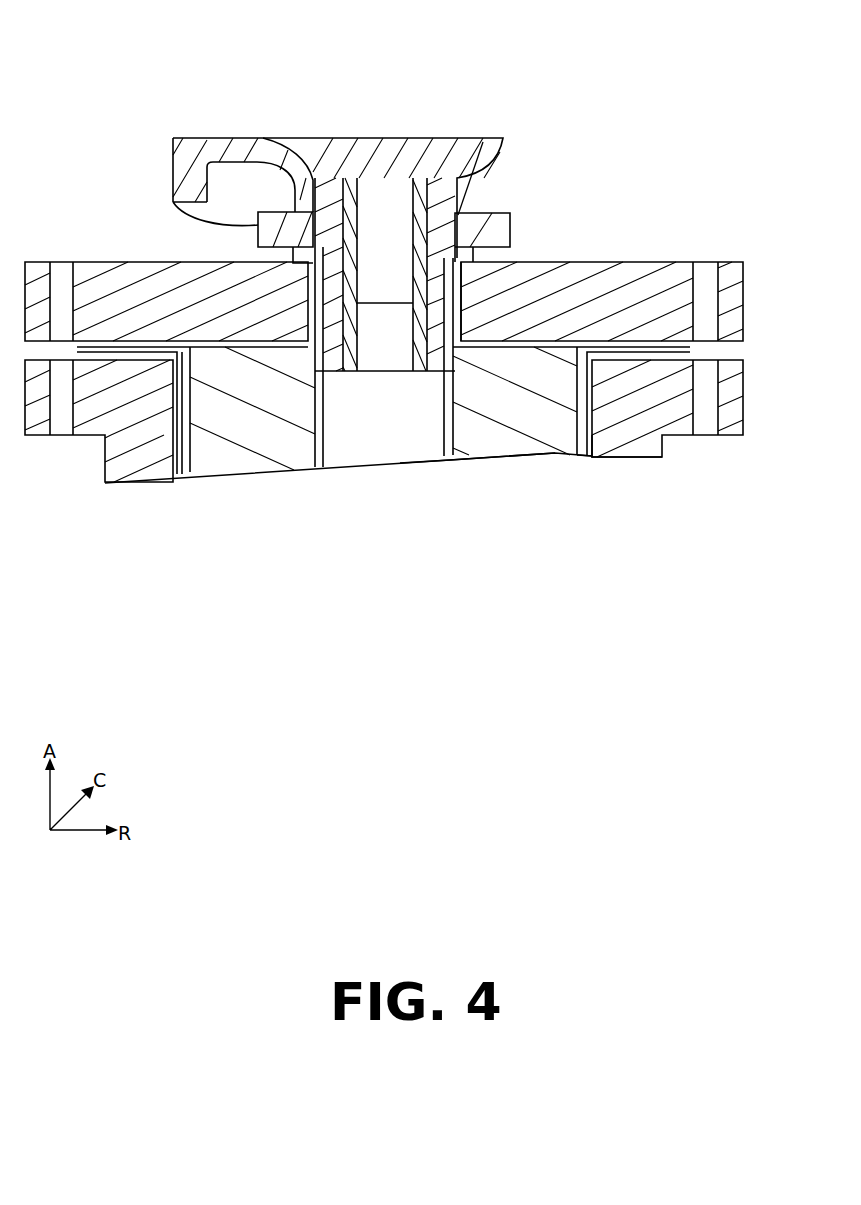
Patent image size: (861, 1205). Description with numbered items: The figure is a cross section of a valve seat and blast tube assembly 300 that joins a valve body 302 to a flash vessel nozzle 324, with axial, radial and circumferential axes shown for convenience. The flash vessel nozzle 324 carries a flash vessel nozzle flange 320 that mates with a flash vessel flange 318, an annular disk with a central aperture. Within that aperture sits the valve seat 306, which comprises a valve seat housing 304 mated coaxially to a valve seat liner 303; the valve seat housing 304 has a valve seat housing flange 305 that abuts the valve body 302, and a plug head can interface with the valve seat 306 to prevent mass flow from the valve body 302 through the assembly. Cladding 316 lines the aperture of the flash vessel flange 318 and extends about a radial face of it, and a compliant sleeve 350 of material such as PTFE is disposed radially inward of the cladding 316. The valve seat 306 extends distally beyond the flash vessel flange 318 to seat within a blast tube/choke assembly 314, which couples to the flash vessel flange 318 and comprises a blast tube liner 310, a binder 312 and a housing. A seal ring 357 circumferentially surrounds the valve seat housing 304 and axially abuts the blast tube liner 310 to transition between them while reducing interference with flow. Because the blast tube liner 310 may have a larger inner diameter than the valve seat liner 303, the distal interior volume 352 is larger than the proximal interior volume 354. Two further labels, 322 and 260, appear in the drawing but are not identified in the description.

The valve seat and blast tube assembly 300 is at (78, 88).
The valve body 302 is at (485, 153).
The valve seat liner 303 is at (423, 223).
The valve seat housing 304 is at (425, 203).
The valve seat housing flange 305 is at (172, 184).
The valve seat 306 is at (253, 236).
The blast tube liner 310 is at (312, 455).
The binder 312 is at (485, 448).
The blast tube/choke assembly 314 is at (587, 455).
The cladding 316 is at (458, 300).
The flash vessel flange 318 is at (128, 272).
The flash vessel nozzle flange 320 is at (673, 418).
The third bearing 322 is at (677, 305).
The flash vessel nozzle 324 is at (105, 455).
The compliant sleeve 350 is at (317, 333).
The distal interior volume 352 is at (393, 455).
The proximal interior volume 354 is at (387, 211).
The seal ring 357 is at (592, 463).
The rotor disk 260 is at (453, 460).